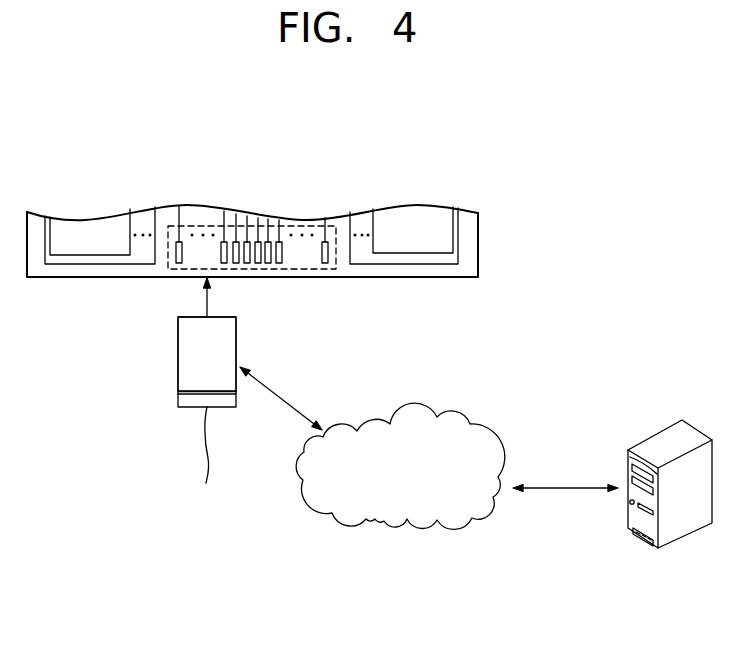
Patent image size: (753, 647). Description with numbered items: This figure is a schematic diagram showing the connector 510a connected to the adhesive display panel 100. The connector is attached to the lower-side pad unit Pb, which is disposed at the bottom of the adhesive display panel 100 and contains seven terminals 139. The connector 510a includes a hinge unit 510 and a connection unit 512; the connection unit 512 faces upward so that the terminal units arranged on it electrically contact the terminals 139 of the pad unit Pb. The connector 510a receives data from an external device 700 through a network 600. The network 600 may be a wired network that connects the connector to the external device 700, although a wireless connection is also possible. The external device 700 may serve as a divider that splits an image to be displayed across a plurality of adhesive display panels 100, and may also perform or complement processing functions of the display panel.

The adhesive display panel 100 is at (311, 258).
The connector 510a is at (147, 357).
The connection unit 512 is at (183, 348).
The hinge unit 510 is at (185, 401).
The lower-side pad unit Pb is at (295, 270).
The terminals 139 is at (325, 270).
The network 600 is at (475, 422).
The external device 700 is at (640, 545).